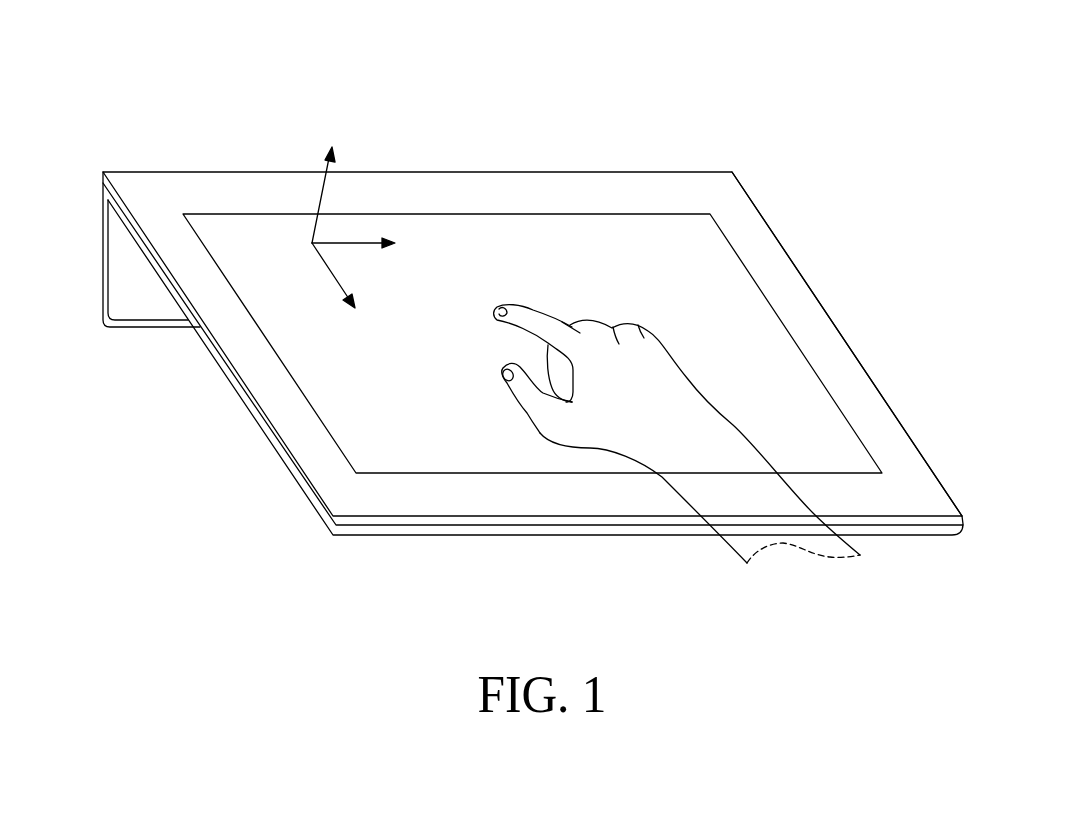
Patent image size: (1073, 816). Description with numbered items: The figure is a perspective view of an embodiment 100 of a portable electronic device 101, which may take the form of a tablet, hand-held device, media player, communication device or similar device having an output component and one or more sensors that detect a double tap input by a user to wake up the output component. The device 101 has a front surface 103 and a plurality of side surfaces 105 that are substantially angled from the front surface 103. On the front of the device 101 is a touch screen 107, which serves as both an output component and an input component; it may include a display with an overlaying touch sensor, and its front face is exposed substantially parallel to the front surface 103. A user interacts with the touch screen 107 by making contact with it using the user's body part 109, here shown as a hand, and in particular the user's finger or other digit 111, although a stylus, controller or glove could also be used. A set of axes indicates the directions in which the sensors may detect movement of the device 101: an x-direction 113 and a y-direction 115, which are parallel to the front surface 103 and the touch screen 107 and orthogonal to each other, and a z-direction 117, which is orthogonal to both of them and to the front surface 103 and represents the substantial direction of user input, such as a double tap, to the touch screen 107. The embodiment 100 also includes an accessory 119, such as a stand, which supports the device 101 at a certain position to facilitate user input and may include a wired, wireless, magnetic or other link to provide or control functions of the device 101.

The embodiment 100 is at (1024, 107).
The portable electronic device 101 is at (649, 172).
The front surface 103 is at (845, 375).
The side surfaces 105 is at (233, 383).
The touch screen 107 is at (745, 310).
The user's body part 109 is at (674, 420).
The finger or other digit 111 is at (503, 305).
The x-direction 113 is at (330, 273).
The y-direction 115 is at (360, 246).
The z-direction 117 is at (336, 152).
The accessory 119 is at (103, 257).